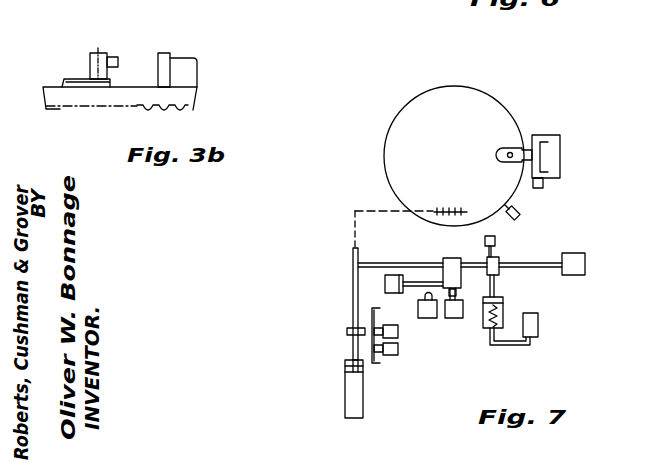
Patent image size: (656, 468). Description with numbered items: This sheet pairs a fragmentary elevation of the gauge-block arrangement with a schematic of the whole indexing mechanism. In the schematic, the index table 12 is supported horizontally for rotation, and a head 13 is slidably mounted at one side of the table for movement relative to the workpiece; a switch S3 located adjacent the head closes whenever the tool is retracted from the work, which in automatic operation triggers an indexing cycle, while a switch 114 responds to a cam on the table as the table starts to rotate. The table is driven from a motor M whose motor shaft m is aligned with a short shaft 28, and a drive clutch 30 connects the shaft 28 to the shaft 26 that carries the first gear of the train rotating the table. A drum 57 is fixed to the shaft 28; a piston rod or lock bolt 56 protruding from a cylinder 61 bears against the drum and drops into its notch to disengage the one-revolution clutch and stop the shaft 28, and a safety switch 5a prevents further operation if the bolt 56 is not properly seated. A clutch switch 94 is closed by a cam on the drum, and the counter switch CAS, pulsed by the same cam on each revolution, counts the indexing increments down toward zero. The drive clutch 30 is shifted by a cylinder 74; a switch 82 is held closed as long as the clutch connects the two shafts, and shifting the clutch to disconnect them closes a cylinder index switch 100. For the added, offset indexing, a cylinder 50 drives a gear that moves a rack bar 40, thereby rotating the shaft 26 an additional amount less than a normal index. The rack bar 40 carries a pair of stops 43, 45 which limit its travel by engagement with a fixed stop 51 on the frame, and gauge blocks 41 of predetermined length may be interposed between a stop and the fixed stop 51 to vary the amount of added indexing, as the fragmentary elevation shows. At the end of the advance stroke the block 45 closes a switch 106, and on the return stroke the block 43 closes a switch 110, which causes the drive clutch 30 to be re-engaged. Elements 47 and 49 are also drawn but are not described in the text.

In FIG. 3B, the rack bar 40 is at (92, 97).
In FIG. 3B, the gauge block 41 is at (165, 52).
In FIG. 3B, the stop 45 is at (182, 75).
In FIG. 7, the stop 45 is at (358, 364).
In FIG. 3B, the valve block 49 is at (99, 52).
In FIG. 7, the valve block 49 is at (395, 363).
In FIG. 3B, the fixed stop 51 is at (72, 78).
In FIG. 7, the index table 12 is at (386, 136).
In FIG. 7, the head 13 is at (520, 147).
In FIG. 7, the switch S3 is at (545, 183).
In FIG. 7, the switch 114 is at (521, 209).
In FIG. 7, the shaft 26 is at (354, 262).
In FIG. 7, the drive clutch 30 is at (445, 253).
In FIG. 7, the cylinder 74 is at (402, 258).
In FIG. 7, the cylinder index switch 100 is at (419, 311).
In FIG. 7, the shaft 28 is at (483, 275).
In FIG. 7, the switch 82 is at (452, 320).
In FIG. 7, the clutch switch 94 is at (475, 245).
In FIG. 7, the counter switch CAS is at (500, 242).
In FIG. 7, the drum 57 is at (500, 271).
In FIG. 7, the motor shaft m is at (538, 262).
In FIG. 7, the motor M is at (586, 268).
In FIG. 7, the piston rod 56 is at (505, 300).
In FIG. 7, the cylinder 61 is at (491, 336).
In FIG. 7, the safety switch 5a is at (540, 325).
In FIG. 7, the stop 43 is at (371, 308).
In FIG. 7, the switch 106 is at (370, 317).
In FIG. 7, the valve 47 is at (402, 334).
In FIG. 7, the switch 110 is at (381, 358).
In FIG. 7, the cylinder 50 is at (348, 396).